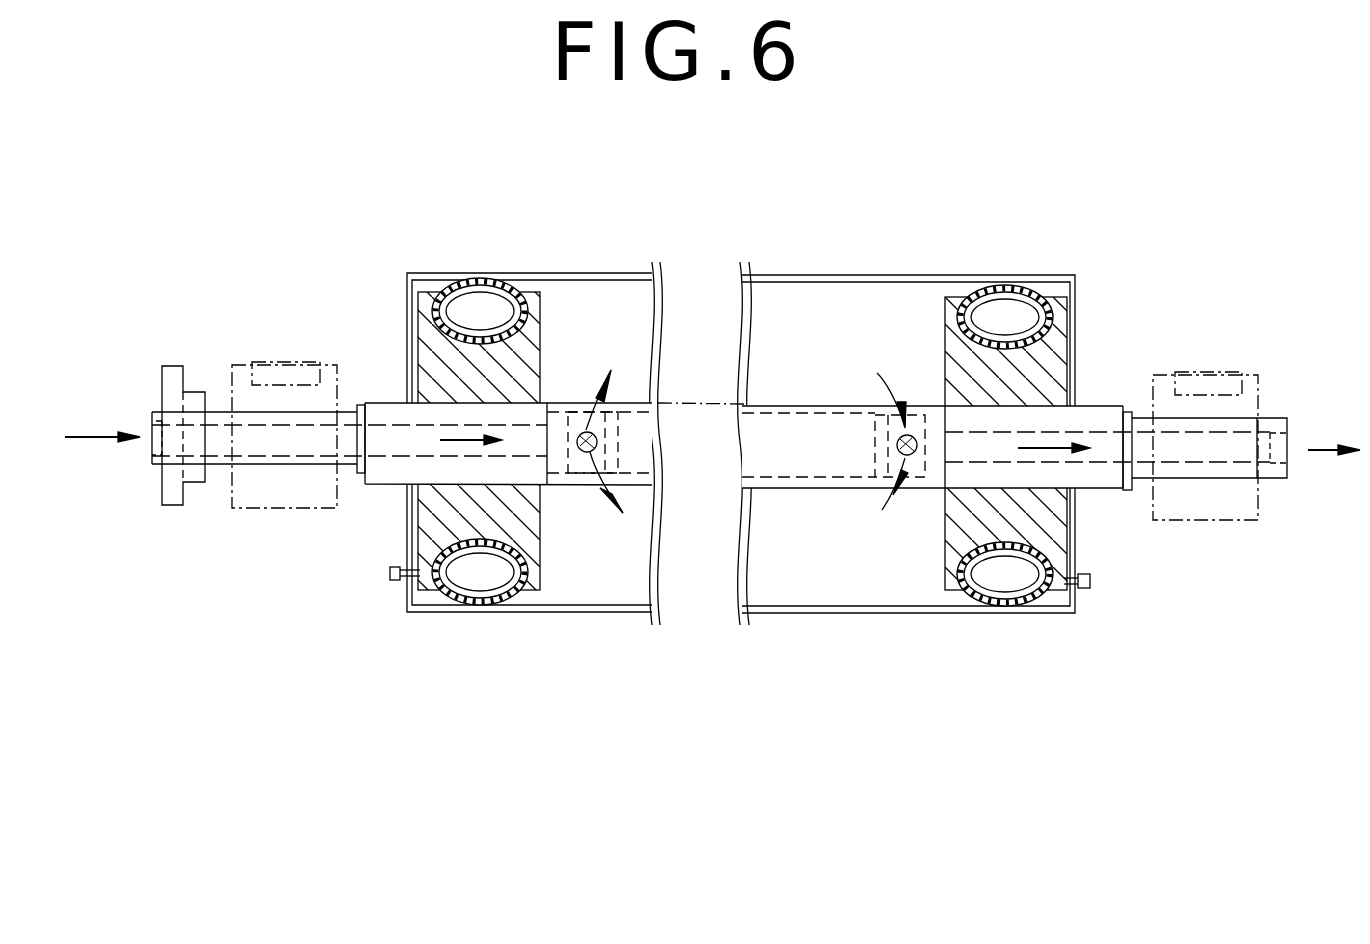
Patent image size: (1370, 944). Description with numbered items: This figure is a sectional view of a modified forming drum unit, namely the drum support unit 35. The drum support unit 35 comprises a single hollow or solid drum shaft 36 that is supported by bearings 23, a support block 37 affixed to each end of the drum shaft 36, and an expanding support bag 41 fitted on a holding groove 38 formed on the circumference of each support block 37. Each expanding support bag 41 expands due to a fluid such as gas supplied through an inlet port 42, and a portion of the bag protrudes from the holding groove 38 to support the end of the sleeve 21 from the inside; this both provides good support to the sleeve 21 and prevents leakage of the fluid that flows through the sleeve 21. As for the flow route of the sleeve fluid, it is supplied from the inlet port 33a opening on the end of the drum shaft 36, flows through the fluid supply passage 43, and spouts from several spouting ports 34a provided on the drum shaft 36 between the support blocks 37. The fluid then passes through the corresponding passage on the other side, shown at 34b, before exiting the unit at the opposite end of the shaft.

The sleeve 21 is at (770, 273).
The bearings 23 is at (290, 375).
The inlet port 33a is at (155, 450).
The spouting ports 34a is at (587, 452).
The coupling ball 34b is at (905, 455).
The drum support unit 35 is at (431, 153).
The drum shaft 36 is at (293, 475).
The support block 37 is at (540, 345).
The holding groove 38 is at (503, 330).
The expanding support bag 41 is at (450, 283).
The inlet port 42 is at (388, 580).
The fluid supply passage 43 is at (395, 445).